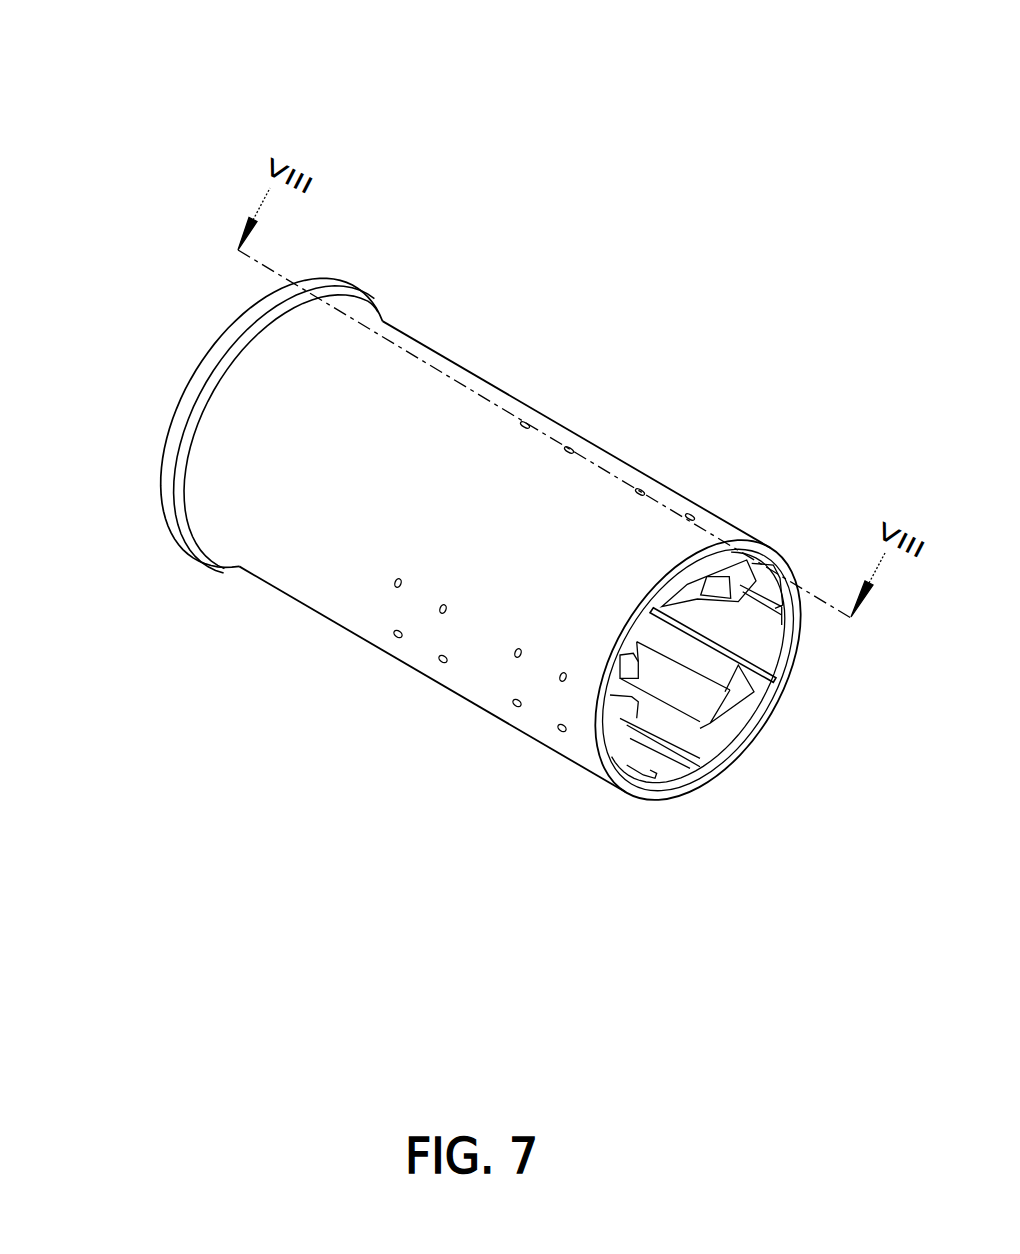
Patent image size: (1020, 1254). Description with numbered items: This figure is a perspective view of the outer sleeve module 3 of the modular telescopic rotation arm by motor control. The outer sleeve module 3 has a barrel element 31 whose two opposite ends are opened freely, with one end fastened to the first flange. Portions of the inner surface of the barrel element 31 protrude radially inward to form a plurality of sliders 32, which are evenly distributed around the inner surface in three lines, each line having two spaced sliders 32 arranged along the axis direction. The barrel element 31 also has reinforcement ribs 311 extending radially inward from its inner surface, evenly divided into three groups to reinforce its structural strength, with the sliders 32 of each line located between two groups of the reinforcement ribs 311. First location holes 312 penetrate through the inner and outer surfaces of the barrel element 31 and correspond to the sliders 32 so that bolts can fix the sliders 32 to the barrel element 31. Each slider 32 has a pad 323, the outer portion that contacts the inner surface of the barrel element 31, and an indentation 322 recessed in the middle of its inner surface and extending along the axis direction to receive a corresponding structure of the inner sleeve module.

The outer sleeve module 3 is at (78, 55).
The barrel element 31 is at (311, 590).
The reinforcement rib 311 is at (655, 773).
The first location hole 312 is at (441, 662).
The slider 32 is at (682, 693).
The indentation 322 is at (725, 703).
The pad 323 is at (718, 700).